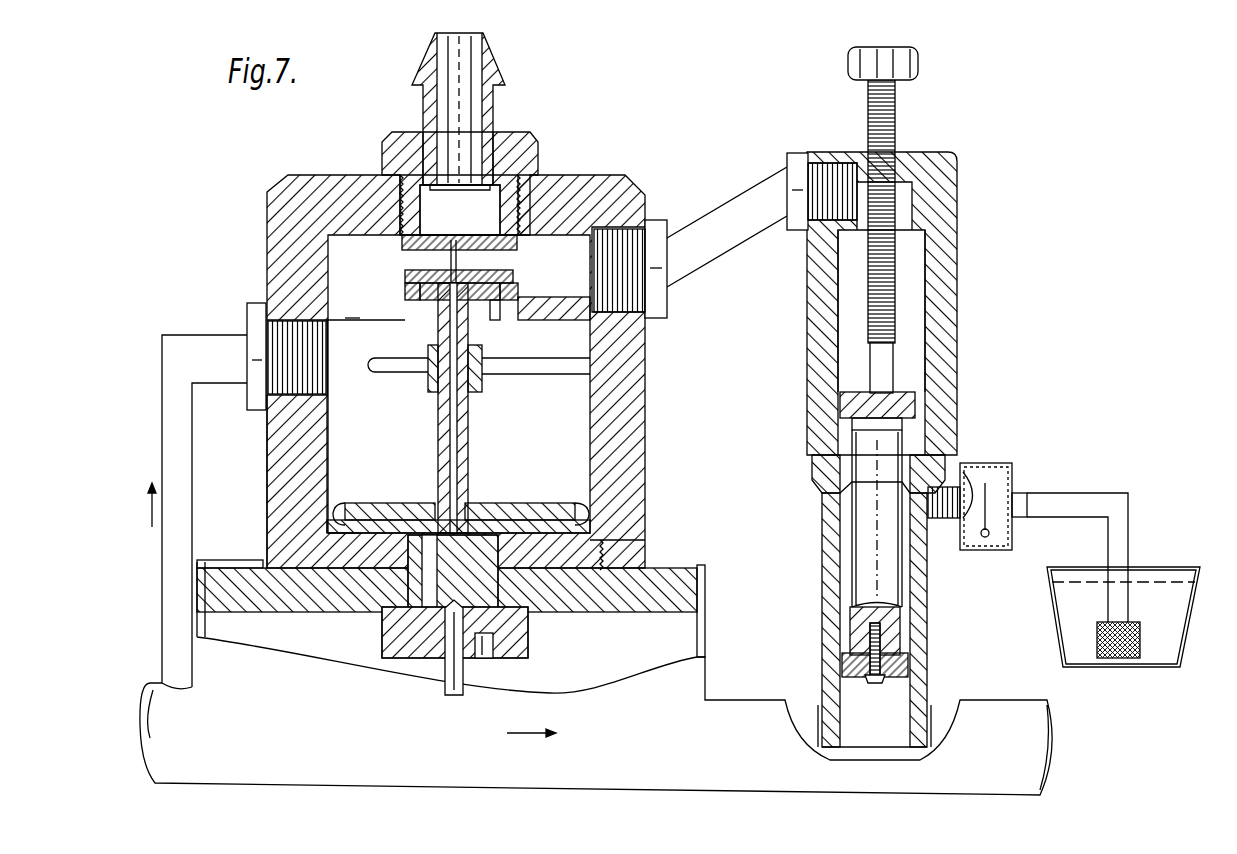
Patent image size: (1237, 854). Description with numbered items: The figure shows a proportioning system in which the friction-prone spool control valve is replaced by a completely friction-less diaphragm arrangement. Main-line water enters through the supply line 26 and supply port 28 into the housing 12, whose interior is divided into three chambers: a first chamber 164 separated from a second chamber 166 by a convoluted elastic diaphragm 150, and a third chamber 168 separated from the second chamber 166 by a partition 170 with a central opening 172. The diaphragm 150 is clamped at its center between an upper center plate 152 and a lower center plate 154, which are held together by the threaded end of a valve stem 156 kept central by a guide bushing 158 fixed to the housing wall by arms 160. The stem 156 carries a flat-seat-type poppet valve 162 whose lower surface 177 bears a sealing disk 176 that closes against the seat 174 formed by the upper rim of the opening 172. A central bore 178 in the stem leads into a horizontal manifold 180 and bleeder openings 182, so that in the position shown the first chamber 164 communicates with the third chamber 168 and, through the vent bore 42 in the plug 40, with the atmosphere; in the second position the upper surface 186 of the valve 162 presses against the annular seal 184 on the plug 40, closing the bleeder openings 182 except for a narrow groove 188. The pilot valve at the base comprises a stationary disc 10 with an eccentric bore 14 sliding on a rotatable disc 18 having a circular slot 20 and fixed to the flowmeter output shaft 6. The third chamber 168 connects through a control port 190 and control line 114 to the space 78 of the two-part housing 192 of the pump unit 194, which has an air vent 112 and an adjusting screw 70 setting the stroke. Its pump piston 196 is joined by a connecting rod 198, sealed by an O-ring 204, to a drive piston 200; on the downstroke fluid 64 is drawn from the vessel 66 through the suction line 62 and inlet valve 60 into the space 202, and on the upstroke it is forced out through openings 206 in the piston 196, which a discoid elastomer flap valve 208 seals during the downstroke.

The output shaft 6 is at (449, 680).
The stationary disc 10 is at (440, 600).
The housing 12 is at (642, 488).
The bore 14 is at (427, 608).
The rotatable disc 18 is at (535, 640).
The circular slot 20 is at (485, 658).
The supply line 26 is at (162, 456).
The supply port 28 is at (287, 318).
The plug 40 is at (492, 98).
The bore 42 is at (485, 198).
The inlet valve 60 is at (1005, 463).
The suction line 62 is at (1113, 465).
The fluid 64 is at (1167, 593).
The vessel 66 is at (1193, 610).
The adjusting screw 70 is at (895, 258).
The space 78 is at (912, 293).
The air vent 112 is at (812, 473).
The control line 114 is at (764, 184).
The convoluted elastic diaphragm 150 is at (583, 510).
The upper center plate 152 is at (497, 507).
The lower center plate 154 is at (417, 512).
The valve stem 156 is at (443, 447).
The guide bushing 158 is at (427, 382).
The arms 160 is at (555, 376).
The poppet valve 162 is at (407, 280).
The first chamber 164 is at (550, 540).
The second chamber 166 is at (335, 458).
The third chamber 168 is at (335, 263).
The partition 170 is at (337, 320).
The central opening 172 is at (512, 312).
The seat 174 is at (508, 300).
The sealing disk 176 is at (417, 317).
The lower surface 177 is at (494, 312).
The central bore 178 is at (458, 427).
The horizontal manifold 180 is at (352, 318).
The bleeder openings 182 is at (405, 262).
The annular seal 184 is at (420, 280).
The upper surface 186 is at (453, 272).
The groove 188 is at (518, 280).
The control port 190 is at (628, 253).
The two-part housing 192 is at (953, 307).
The pump unit 194 is at (788, 431).
The pump piston 196 is at (903, 653).
The connecting rod 198 is at (890, 593).
The drive piston 200 is at (903, 395).
The space 202 is at (843, 588).
The O-ring 204 is at (842, 497).
The openings 206 is at (848, 645).
The flap valve 208 is at (858, 677).